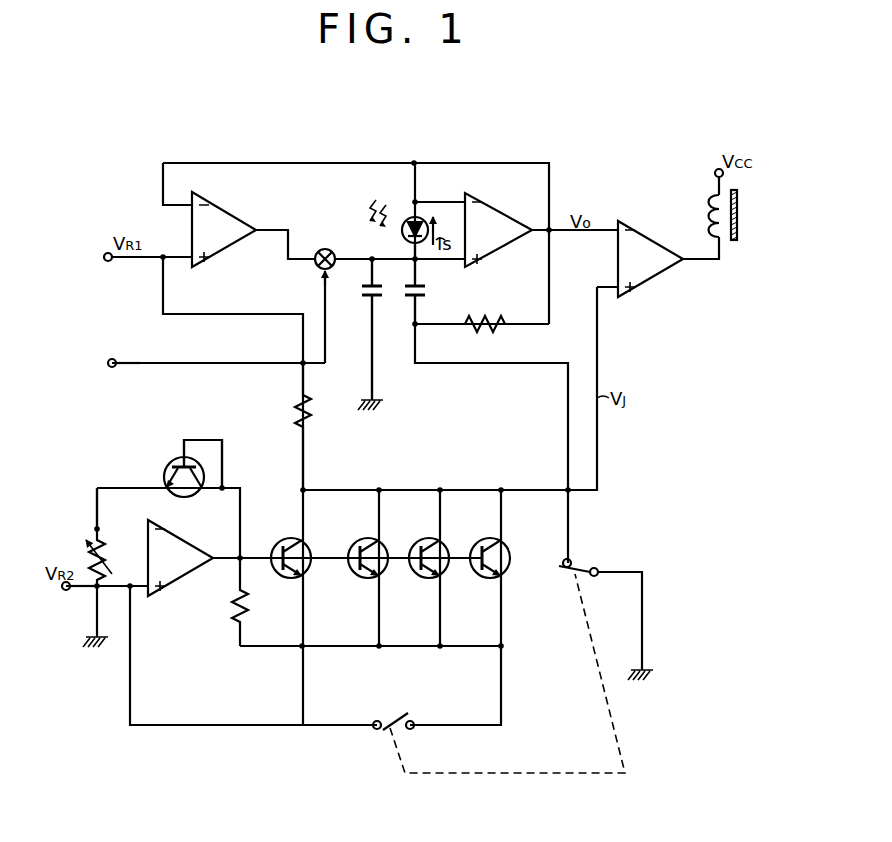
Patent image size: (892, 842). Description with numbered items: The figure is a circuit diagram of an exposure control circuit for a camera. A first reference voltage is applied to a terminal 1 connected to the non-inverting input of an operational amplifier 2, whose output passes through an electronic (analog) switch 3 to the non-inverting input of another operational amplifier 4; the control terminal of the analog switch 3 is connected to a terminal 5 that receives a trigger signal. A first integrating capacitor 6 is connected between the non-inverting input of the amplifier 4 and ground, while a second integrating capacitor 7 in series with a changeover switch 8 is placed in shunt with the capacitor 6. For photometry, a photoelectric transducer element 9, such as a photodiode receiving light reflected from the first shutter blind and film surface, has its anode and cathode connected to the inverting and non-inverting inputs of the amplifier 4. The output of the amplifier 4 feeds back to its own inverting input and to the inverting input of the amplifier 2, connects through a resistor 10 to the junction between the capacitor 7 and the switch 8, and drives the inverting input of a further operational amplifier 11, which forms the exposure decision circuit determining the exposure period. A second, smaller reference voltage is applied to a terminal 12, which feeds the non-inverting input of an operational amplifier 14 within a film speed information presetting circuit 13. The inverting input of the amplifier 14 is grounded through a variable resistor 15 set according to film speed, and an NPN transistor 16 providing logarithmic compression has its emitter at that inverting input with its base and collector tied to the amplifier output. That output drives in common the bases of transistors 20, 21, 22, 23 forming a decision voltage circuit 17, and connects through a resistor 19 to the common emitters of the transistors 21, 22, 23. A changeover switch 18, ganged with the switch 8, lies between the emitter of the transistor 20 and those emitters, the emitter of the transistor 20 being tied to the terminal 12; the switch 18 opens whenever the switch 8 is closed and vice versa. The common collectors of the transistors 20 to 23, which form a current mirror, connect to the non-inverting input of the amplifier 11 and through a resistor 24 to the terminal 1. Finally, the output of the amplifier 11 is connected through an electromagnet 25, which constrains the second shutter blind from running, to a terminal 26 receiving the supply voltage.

The terminal 1 is at (104, 260).
The operational amplifier 2 is at (224, 212).
The electronic switch 3 is at (330, 251).
The operational amplifier 4 is at (500, 216).
The terminal 5 is at (117, 350).
The first integrating capacitor 6 is at (362, 291).
The second integrating capacitor 7 is at (405, 293).
The changeover switch 8 is at (585, 568).
The photoelectric transducer element 9 is at (406, 222).
The resistor 10 is at (483, 320).
The operational amplifier 11 is at (652, 276).
The terminal 12 is at (66, 592).
The film speed information presetting circuit 13 is at (83, 513).
The operational amplifier 14 is at (176, 540).
The variable resistor 15 is at (102, 552).
The NPN transistor 16 is at (166, 476).
The decision voltage circuit 17 is at (428, 475).
The changeover switch 18 is at (397, 715).
The resistor 19 is at (232, 603).
The transistor 20 is at (304, 550).
The transistor 21 is at (382, 548).
The transistor 22 is at (442, 550).
The transistor 23 is at (504, 552).
The resistor 24 is at (308, 411).
The electromagnet 25 is at (738, 216).
The terminal 26 is at (714, 174).